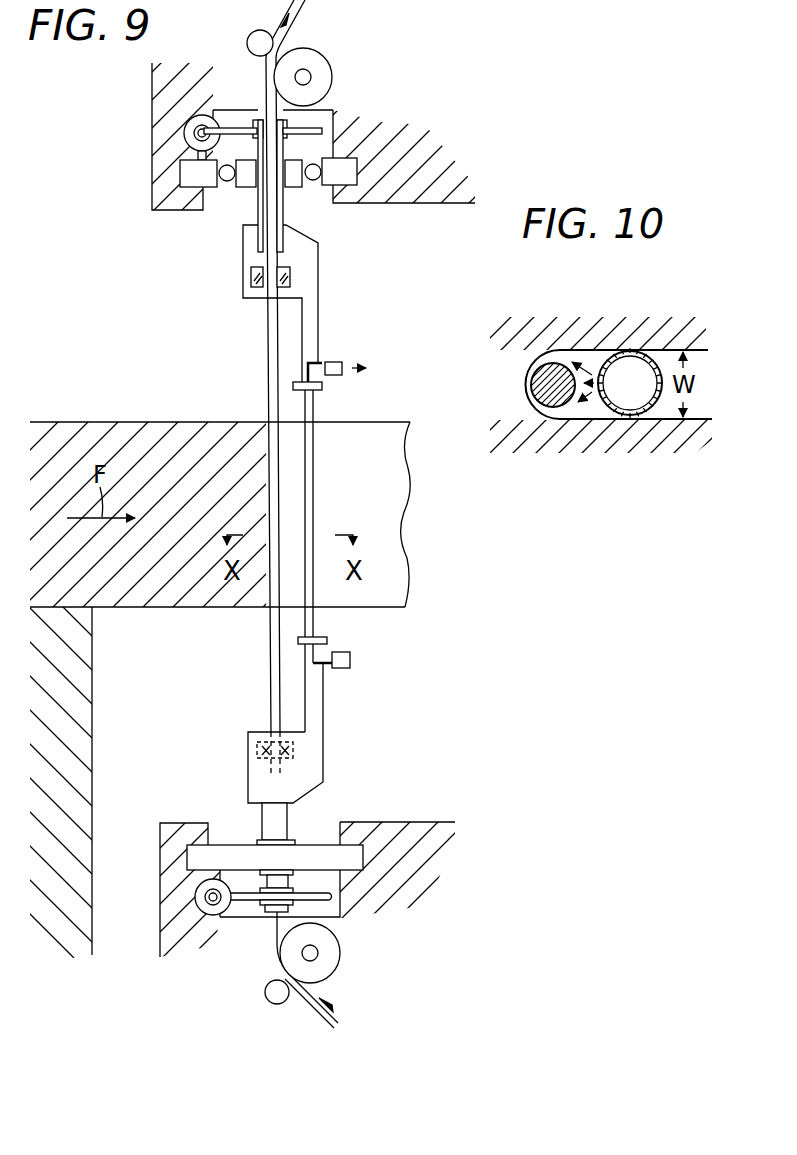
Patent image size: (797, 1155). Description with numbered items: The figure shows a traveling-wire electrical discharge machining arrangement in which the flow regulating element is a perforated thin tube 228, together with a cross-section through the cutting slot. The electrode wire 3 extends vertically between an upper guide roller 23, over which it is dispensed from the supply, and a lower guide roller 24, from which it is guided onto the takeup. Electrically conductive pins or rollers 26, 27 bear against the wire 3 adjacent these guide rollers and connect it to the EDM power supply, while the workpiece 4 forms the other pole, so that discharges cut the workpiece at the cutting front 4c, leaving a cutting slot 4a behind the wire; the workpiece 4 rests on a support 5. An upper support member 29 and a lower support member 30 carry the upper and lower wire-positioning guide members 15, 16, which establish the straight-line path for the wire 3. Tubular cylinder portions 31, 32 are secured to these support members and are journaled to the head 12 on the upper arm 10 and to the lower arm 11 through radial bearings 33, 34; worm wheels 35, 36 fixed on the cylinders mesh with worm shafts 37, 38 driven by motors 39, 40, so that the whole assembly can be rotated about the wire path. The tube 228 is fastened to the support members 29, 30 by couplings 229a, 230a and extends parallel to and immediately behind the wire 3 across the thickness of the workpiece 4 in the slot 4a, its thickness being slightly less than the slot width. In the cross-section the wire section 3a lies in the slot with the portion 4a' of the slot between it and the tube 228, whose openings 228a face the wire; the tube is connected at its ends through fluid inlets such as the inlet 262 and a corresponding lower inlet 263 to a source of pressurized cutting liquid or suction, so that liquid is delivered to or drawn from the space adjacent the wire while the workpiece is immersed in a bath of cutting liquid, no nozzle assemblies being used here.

In FIG. 9, the electrode wire 3 is at (312, 13).
In FIG. 10, the electrode wire 3 is at (556, 348).
In FIG. 10, the wire electrode cross-section 3a is at (546, 382).
In FIG. 9, the workpiece 4 is at (155, 421).
In FIG. 10, the workpiece 4 is at (518, 332).
In FIG. 9, the cutting slot 4a is at (422, 514).
In FIG. 10, the cutting slot 4a is at (619, 414).
In FIG. 9, the portion of the cutting slot 4a' is at (370, 513).
In FIG. 10, the portion of the cutting slot 4a' is at (571, 459).
In FIG. 9, the cutting front 4c is at (262, 492).
In FIG. 10, the cutting front 4c is at (521, 398).
In FIG. 9, the workpiece table 5 is at (93, 701).
In FIG. 9, the upper arm 10 is at (432, 196).
In FIG. 9, the lower arm 11 is at (407, 818).
In FIG. 9, the head 12 is at (168, 204).
In FIG. 9, the upper wire-positioning guide member 15 is at (250, 277).
In FIG. 9, the lower wire-positioning guide member 16 is at (257, 750).
In FIG. 9, the upper guide roller 23 is at (332, 66).
In FIG. 9, the lower guide roller 24 is at (341, 945).
In FIG. 9, the electrically conductive pin or roller 26 is at (250, 36).
In FIG. 9, the electrically conductive pin or roller 27 is at (264, 992).
In FIG. 9, the upper support member 29 is at (319, 262).
In FIG. 9, the lower support member 30 is at (314, 753).
In FIG. 9, the upper cylinder 31 is at (284, 120).
In FIG. 9, the lower cylinder 32 is at (288, 817).
In FIG. 9, the radial bearing 33 is at (357, 164).
In FIG. 9, the radial bearing 34 is at (364, 854).
In FIG. 9, the worm wheel 35 is at (244, 110).
In FIG. 9, the worm wheel 36 is at (331, 906).
In FIG. 9, the worm shaft 37 is at (203, 114).
In FIG. 9, the worm shaft 38 is at (212, 918).
In FIG. 9, the motor 39 is at (185, 124).
In FIG. 9, the motor 40 is at (194, 900).
In FIG. 9, the perforated thin tube 228 is at (303, 408).
In FIG. 10, the perforated thin tube 228 is at (652, 350).
In FIG. 10, the openings 228a is at (628, 414).
In FIG. 9, the coupling 229a is at (323, 386).
In FIG. 9, the coupling 230a is at (298, 641).
In FIG. 9, the fluid inlet 262 is at (338, 361).
In FIG. 9, the lower sensor unit 263 is at (342, 652).